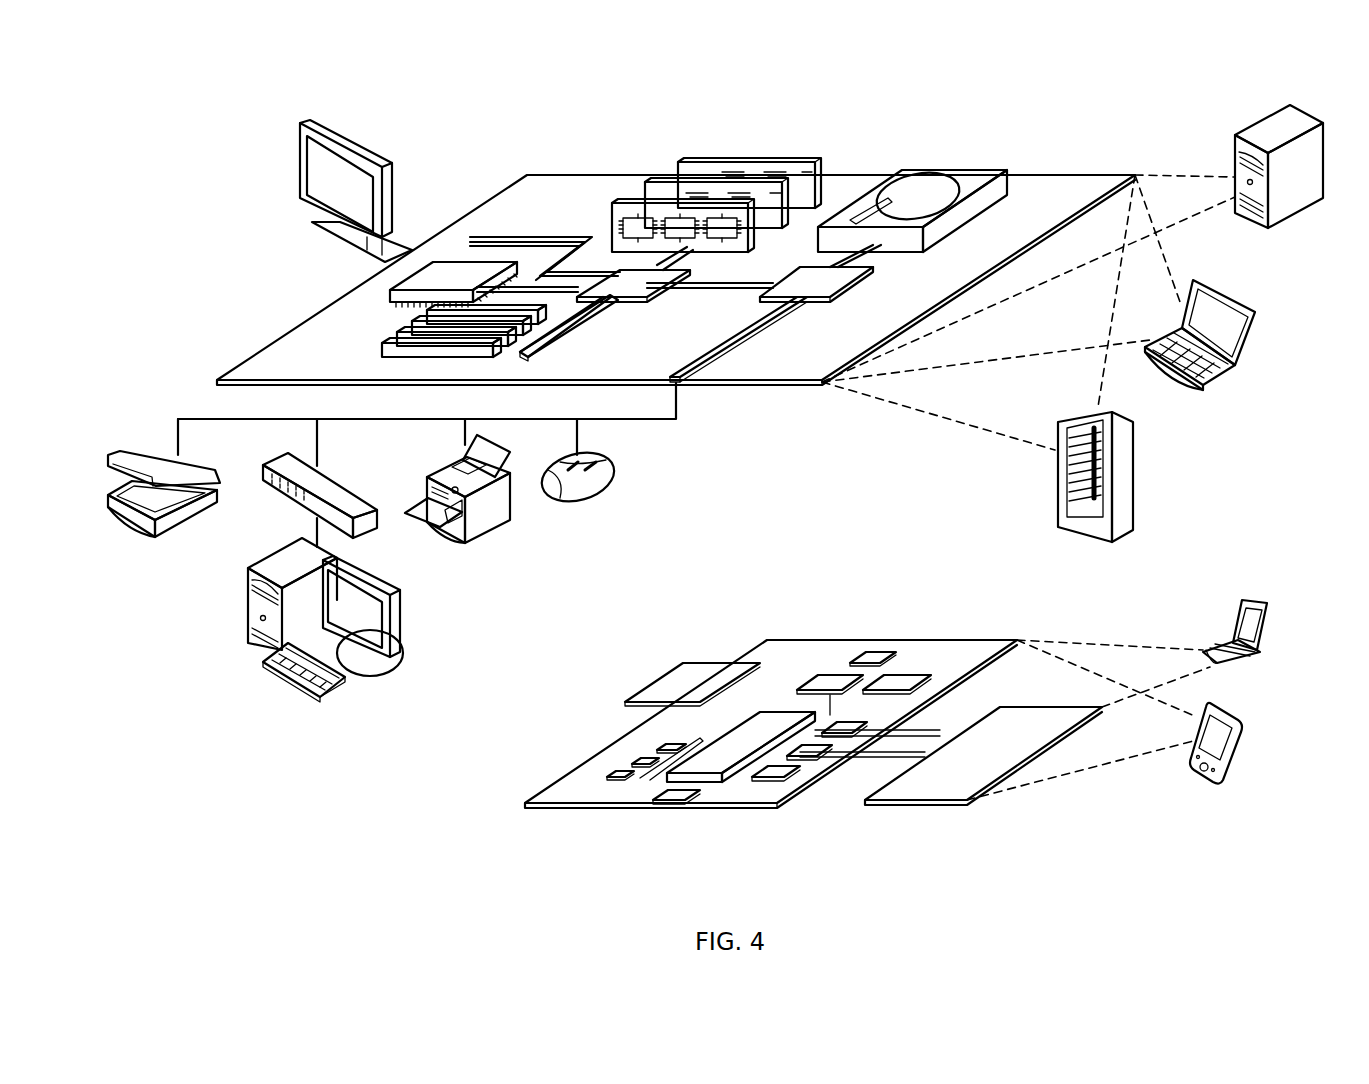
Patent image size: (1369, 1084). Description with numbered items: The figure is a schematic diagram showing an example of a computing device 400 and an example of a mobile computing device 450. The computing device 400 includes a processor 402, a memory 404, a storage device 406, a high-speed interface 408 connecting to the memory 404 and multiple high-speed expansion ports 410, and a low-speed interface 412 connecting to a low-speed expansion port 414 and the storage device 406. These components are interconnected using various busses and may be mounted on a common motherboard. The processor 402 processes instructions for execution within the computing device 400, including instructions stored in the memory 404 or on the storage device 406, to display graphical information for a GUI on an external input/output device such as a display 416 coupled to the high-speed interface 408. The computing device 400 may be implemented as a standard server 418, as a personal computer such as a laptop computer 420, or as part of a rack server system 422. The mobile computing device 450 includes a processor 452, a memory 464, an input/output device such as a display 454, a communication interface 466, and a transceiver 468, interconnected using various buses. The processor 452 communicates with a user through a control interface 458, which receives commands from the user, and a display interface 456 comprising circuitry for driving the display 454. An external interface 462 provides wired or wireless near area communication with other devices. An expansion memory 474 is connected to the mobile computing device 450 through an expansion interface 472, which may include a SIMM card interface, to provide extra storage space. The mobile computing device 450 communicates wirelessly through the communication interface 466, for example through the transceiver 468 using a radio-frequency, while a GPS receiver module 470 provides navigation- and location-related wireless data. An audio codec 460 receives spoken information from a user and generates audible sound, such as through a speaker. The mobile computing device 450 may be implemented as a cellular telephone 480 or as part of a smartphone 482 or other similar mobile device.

The computing device 400 is at (505, 140).
The processor 402 is at (437, 283).
The memory 404 is at (752, 160).
The storage device 406 is at (954, 170).
The high-speed interface 408 is at (622, 300).
The high-speed expansion ports 410 is at (370, 350).
The low-speed interface 412 is at (868, 296).
The low-speed expansion port 414 is at (730, 352).
The display 416 is at (302, 128).
The standard server 418 is at (1252, 124).
The laptop computer 420 is at (1252, 311).
The rack server system 422 is at (1133, 480).
The mobile computing device 450 is at (733, 595).
The processor 452 is at (724, 732).
The display 454 is at (910, 800).
The display interface 456 is at (770, 780).
The control interface 458 is at (808, 760).
The audio codec 460 is at (845, 737).
The external interface 462 is at (668, 804).
The memory 464 is at (608, 773).
The communication interface 466 is at (830, 675).
The transceiver 468 is at (908, 676).
The GPS receiver module 470 is at (885, 652).
The expansion interface 472 is at (760, 652).
The expansion memory 474 is at (670, 674).
The cellular telephone 480 is at (1268, 600).
The smartphone 482 is at (1240, 716).